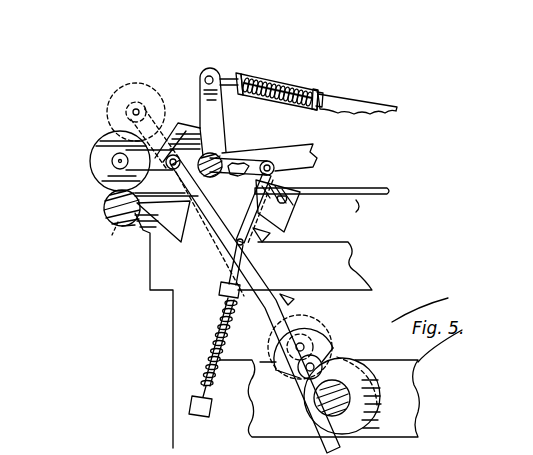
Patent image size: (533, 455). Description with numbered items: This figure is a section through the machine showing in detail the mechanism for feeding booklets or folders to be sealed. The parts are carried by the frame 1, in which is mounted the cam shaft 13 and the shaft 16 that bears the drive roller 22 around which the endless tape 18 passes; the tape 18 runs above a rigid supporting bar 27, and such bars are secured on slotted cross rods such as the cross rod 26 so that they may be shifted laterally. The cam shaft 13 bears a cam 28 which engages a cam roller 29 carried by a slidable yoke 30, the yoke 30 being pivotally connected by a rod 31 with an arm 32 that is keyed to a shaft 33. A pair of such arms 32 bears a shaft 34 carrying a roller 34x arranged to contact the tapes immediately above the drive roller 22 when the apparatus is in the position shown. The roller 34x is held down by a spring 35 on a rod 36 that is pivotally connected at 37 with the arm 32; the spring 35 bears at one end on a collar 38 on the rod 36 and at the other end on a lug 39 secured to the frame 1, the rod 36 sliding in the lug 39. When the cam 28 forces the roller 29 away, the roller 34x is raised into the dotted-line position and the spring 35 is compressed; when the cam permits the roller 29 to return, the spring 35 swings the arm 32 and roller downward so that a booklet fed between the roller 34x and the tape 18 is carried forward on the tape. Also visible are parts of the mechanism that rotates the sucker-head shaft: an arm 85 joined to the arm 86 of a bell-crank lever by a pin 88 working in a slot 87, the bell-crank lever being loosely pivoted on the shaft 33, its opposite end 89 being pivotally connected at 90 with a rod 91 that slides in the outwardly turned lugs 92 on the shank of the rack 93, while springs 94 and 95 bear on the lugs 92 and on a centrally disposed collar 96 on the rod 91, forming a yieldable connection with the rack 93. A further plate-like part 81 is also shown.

The frame 1 is at (357, 242).
The cam shaft 13 is at (340, 364).
The shaft 16 is at (102, 234).
The tape 18 is at (384, 189).
The roller 22 is at (104, 209).
The cross rod 26 is at (166, 217).
The supporting bar 27 is at (355, 207).
The cam 28 is at (381, 392).
The cam roller 29 is at (330, 348).
The slidable yoke 30 is at (322, 323).
The rod 31 is at (259, 282).
The arm 32 is at (163, 118).
The shaft 33 is at (220, 158).
The shaft 34 is at (150, 100).
The roller 34x is at (132, 93).
The spring 35 is at (210, 348).
The rod 36 is at (246, 245).
The pivotal connection 37 is at (272, 162).
The collar 38 is at (220, 290).
The lug 39 is at (203, 391).
The plate 81 is at (318, 155).
The arm 85 is at (270, 237).
The arm of bell-crank lever 86 is at (292, 219).
The slot 87 is at (290, 198).
The pin 88 is at (242, 173).
The end of bell-crank lever 89 is at (224, 122).
The pivotal connection 90 is at (206, 76).
The rod 91 is at (230, 78).
The lugs 92 is at (240, 80).
The rack 93 is at (396, 106).
The spring 94 is at (318, 94).
The spring 95 is at (274, 86).
The collar 96 is at (292, 90).